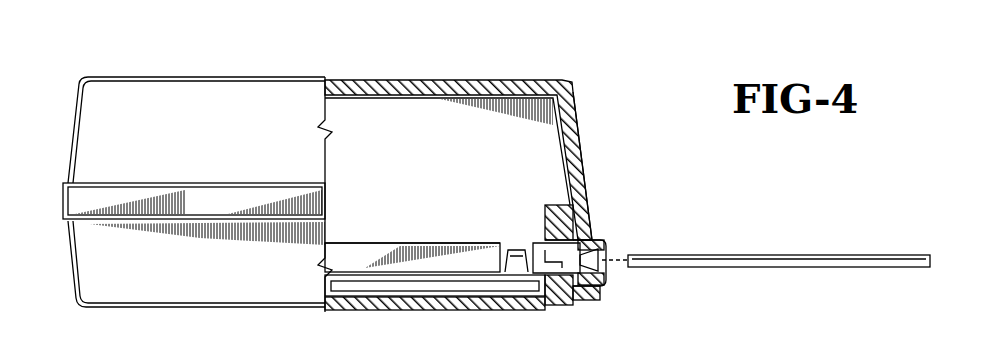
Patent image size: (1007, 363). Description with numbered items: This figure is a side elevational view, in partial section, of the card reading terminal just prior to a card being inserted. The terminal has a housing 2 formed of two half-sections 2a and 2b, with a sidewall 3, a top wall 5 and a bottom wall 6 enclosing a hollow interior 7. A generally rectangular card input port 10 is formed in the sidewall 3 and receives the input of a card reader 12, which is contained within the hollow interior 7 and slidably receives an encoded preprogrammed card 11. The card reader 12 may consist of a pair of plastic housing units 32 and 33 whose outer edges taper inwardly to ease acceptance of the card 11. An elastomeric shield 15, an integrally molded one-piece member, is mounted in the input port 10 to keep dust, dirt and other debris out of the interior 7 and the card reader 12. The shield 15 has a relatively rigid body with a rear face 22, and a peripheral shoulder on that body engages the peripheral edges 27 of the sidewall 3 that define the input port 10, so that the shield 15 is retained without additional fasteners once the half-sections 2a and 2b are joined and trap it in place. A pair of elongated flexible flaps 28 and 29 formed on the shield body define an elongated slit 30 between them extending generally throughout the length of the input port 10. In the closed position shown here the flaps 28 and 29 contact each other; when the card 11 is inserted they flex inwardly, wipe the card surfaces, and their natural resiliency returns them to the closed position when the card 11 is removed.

The housing 2 is at (478, 121).
The half-section of housing 2a is at (262, 93).
The half-section of housing 2b is at (180, 283).
The sidewall 3 is at (578, 140).
The top wall 5 is at (455, 82).
The bottom wall 6 is at (415, 303).
The hollow interior 7 is at (487, 116).
The card input port 10 is at (598, 282).
The encoded preprogrammed card 11 is at (800, 252).
The card reader 12 is at (409, 243).
The elastomeric shield 15 is at (614, 222).
The rear face 22 is at (522, 208).
The peripheral edges 27 is at (598, 230).
The flexible flap 28 is at (606, 243).
The flexible flap 29 is at (605, 276).
The elongated slit 30 is at (608, 262).
The plastic housing unit 32 is at (357, 247).
The plastic housing unit 33 is at (355, 277).